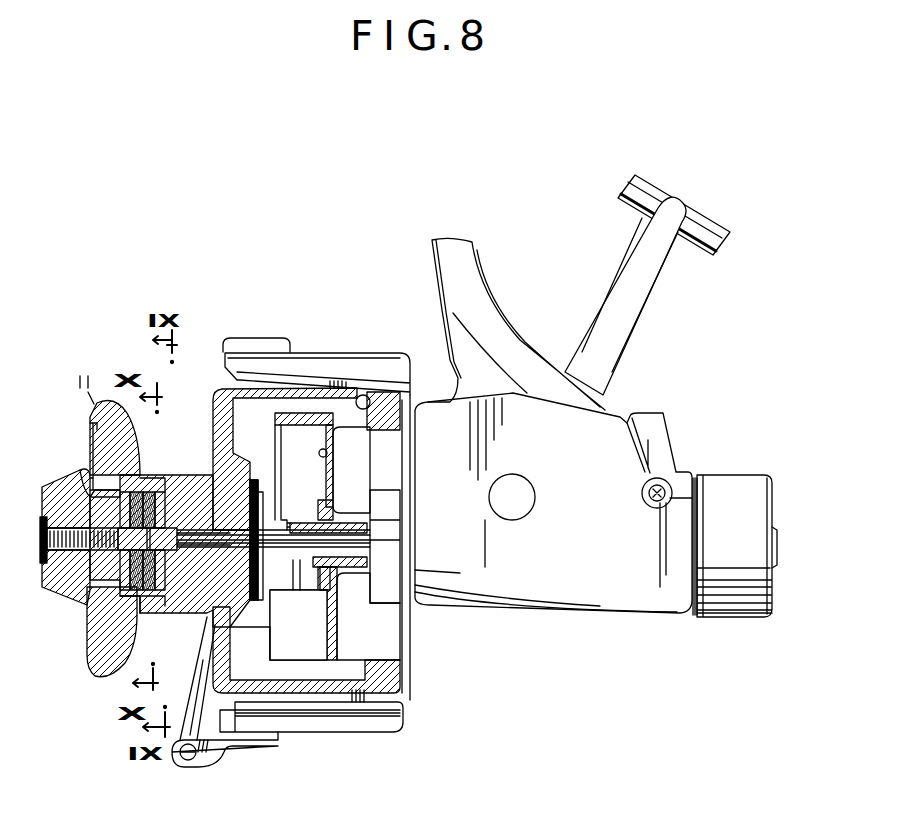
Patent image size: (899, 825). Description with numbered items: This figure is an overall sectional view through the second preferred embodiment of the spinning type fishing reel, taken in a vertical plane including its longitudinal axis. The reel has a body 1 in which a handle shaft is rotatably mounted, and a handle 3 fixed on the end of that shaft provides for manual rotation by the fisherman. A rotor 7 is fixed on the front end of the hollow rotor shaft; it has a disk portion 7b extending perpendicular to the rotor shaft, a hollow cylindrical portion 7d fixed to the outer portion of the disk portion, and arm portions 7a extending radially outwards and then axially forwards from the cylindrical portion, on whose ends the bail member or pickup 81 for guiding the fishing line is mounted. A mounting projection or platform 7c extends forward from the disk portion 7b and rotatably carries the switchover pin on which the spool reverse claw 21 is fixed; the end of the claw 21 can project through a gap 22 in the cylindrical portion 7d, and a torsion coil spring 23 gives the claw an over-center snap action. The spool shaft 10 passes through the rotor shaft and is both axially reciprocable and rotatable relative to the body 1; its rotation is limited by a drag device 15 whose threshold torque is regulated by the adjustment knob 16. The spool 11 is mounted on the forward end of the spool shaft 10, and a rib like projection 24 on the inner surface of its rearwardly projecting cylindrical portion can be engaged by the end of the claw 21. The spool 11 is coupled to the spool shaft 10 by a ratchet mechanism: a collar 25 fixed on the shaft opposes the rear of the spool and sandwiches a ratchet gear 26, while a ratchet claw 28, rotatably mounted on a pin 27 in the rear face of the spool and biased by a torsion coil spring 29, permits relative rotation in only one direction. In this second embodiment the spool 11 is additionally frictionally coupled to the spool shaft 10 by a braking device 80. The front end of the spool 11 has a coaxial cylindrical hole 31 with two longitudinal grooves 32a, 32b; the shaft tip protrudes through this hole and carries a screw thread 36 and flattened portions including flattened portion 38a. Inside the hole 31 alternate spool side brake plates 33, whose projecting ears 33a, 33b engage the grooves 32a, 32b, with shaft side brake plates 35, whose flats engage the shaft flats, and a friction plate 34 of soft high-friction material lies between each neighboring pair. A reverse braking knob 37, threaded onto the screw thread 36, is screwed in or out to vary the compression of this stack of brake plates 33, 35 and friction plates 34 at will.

The body 1 is at (533, 597).
The handle 3 is at (648, 295).
The rotor 7 is at (395, 678).
The arm portions 7a is at (365, 353).
The disk portion 7b is at (337, 628).
The mounting projection or platform 7c is at (305, 572).
The hollow cylindrical portion 7d is at (250, 693).
The spool shaft 10 is at (372, 582).
The spool 11 is at (87, 390).
The drag device 15 is at (768, 471).
The adjustment knob 16 is at (724, 475).
The spool reverse claw 21 is at (218, 587).
The gap 22 is at (295, 565).
The torsion coil spring 23 is at (327, 452).
The rib like projection 24 is at (250, 643).
The collar 25 is at (285, 523).
The ratchet gear 26 is at (277, 500).
The pin 27 is at (268, 470).
The ratchet claw 28 is at (253, 480).
The torsion coil spring 29 is at (252, 495).
The cylindrical hole 31 is at (107, 585).
The groove 32a is at (80, 466).
The groove 32b is at (87, 605).
The spool side brake plates 33 is at (167, 510).
The projecting ear 33a is at (168, 487).
The projecting ear 33b is at (165, 600).
The friction plate 34 is at (140, 490).
The shaft side brake plates 35 is at (150, 490).
The screw thread 36 is at (66, 537).
The reverse braking knob 37 is at (40, 512).
The flattened portion 38a is at (165, 560).
The braking device 80 is at (76, 463).
The bail member or pickup 81 is at (200, 672).